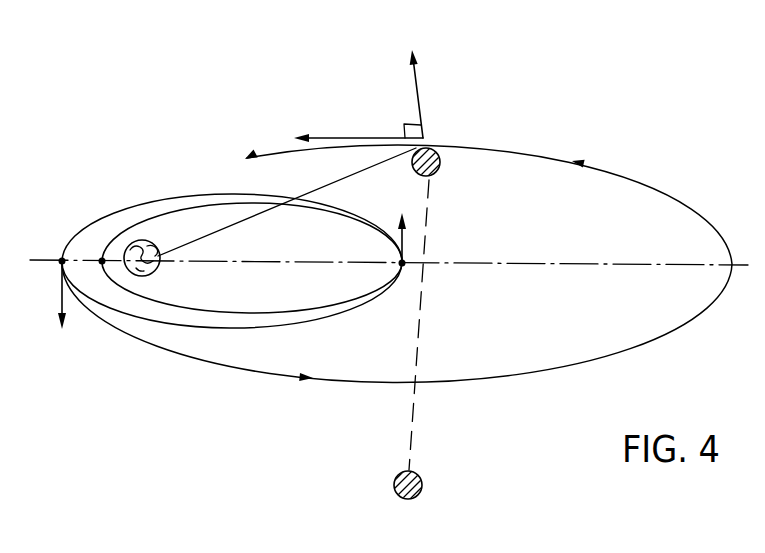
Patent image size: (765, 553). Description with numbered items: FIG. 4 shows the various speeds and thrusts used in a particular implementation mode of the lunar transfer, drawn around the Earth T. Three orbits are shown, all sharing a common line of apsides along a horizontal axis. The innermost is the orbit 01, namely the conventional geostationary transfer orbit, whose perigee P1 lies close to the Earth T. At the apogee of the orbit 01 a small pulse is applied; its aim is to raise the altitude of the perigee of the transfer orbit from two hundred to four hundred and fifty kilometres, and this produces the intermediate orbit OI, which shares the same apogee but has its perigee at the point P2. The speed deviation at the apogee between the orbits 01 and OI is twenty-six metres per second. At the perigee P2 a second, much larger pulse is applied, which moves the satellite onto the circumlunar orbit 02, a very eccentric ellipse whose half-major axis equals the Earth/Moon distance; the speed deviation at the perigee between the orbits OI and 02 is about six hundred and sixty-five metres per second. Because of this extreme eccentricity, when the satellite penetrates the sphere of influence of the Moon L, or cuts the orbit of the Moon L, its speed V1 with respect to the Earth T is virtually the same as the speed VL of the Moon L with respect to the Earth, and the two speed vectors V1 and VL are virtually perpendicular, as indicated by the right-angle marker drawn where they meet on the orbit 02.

The circumlunar orbit 02 is at (222, 366).
The intermediate orbit OI is at (307, 324).
The geostationary transfer orbit 01 is at (243, 311).
The perigee of intermediate orbit P2 is at (62, 260).
The perigee of transfer orbit P1 is at (102, 260).
The Earth T is at (147, 273).
The Moon L is at (440, 172).
The satellite speed with respect to the Earth V1 is at (330, 93).
The Moon speed with respect to the Earth VL is at (460, 58).